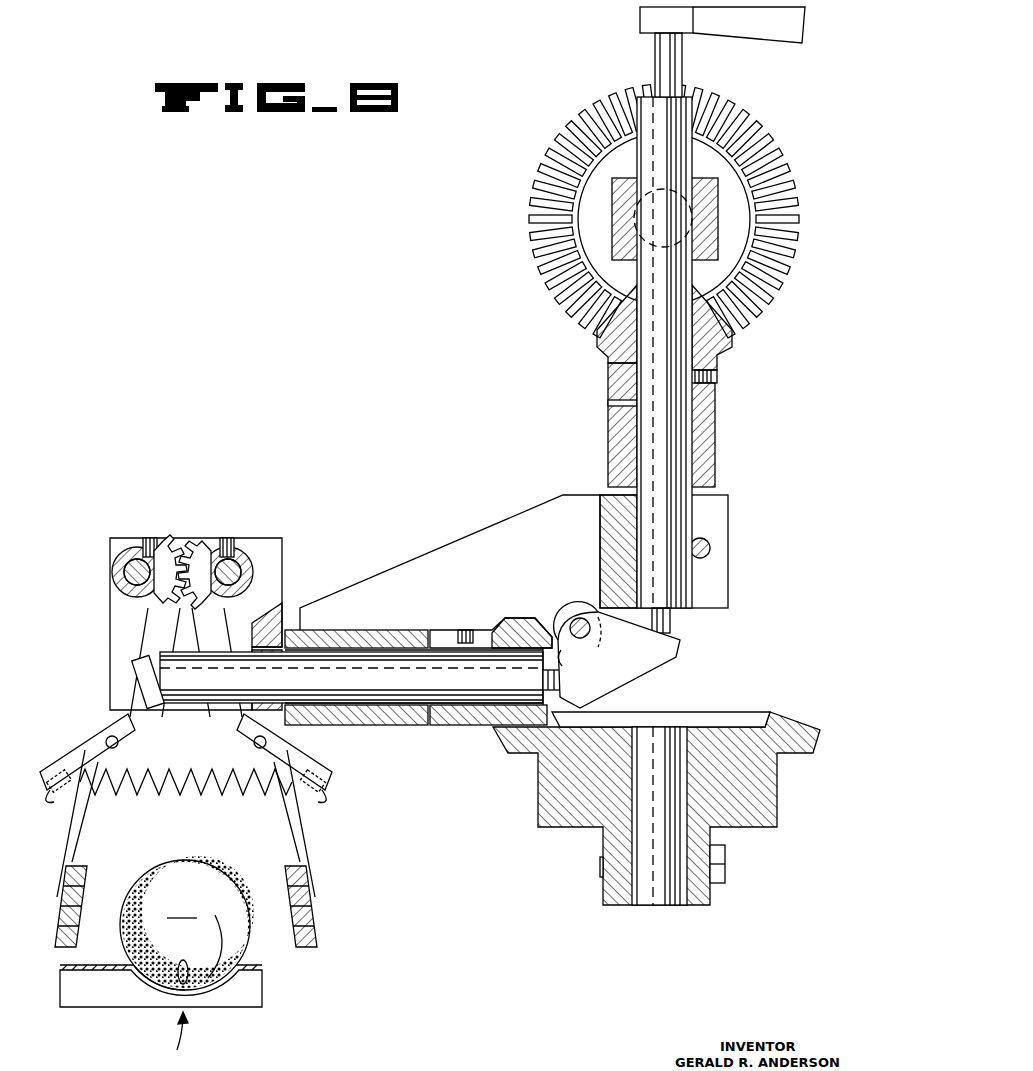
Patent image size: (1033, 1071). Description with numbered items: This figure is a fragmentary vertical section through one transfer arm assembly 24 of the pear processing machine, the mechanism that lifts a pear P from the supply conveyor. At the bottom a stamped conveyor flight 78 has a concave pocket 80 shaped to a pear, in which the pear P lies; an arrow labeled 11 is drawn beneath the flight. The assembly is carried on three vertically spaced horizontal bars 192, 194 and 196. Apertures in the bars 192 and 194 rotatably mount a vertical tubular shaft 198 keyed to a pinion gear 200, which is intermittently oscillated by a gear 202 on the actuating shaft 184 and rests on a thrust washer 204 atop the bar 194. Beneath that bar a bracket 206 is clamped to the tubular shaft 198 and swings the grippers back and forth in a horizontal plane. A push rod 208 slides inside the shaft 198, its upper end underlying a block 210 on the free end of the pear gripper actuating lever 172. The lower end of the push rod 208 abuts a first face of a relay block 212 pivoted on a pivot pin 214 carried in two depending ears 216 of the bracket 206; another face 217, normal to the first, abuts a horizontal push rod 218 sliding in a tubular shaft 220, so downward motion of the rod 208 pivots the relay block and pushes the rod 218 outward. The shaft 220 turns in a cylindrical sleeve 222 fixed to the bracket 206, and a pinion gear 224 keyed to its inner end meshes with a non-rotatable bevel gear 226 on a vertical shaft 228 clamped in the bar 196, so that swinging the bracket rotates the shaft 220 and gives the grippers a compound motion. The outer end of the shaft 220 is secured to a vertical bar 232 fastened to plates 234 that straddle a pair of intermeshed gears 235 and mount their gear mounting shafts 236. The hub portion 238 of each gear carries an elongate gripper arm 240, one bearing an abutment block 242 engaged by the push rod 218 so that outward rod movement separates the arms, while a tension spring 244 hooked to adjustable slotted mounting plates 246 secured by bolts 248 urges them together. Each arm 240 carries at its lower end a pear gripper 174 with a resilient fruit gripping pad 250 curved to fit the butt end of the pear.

The direction of movement 11 is at (180, 1041).
The transfer arm assembly 24 is at (181, 474).
The supply conveyor flight 78 is at (257, 983).
The concave pocket 80 is at (143, 980).
The pear gripper actuating lever 172 is at (802, 43).
The pear grippers 174 is at (70, 850).
The actuating shaft 184 is at (612, 192).
The horizontal bar 192 is at (613, 213).
The horizontal bar 194 is at (610, 447).
The horizontal bar 196 is at (603, 848).
The vertical tubular shaft 198 is at (680, 437).
The pinion gear 200 is at (733, 347).
The gear 202 is at (543, 270).
The thrust washer 204 is at (608, 403).
The bracket 206 is at (562, 551).
The push rod 208 is at (657, 58).
The block 210 is at (640, 16).
The relay block 212 is at (680, 646).
The pivot pin 214 is at (580, 618).
The depending ears 216 is at (572, 614).
The face of relay block 217 is at (578, 660).
The horizontal push rod 218 is at (238, 674).
The tubular shaft 220 is at (328, 648).
The cylindrical sleeve 222 is at (345, 725).
The pinion gear 224 is at (503, 623).
The bevel gear 226 is at (790, 720).
The vertical shaft 228 is at (655, 893).
The vertical bar 232 is at (268, 597).
The plate 234 is at (295, 545).
The intermeshed gears 235 is at (220, 540).
The gear mounting shafts 236 is at (137, 570).
The hub portion 238 is at (135, 545).
The gripper arm 240 is at (232, 713).
The abutment block 242 is at (140, 677).
The tension spring 244 is at (223, 797).
The adjustable slotted mounting plates 246 is at (52, 765).
The bolts 248 is at (254, 746).
The resilient fruit gripping pad 250 is at (90, 874).
The product P is at (187, 923).